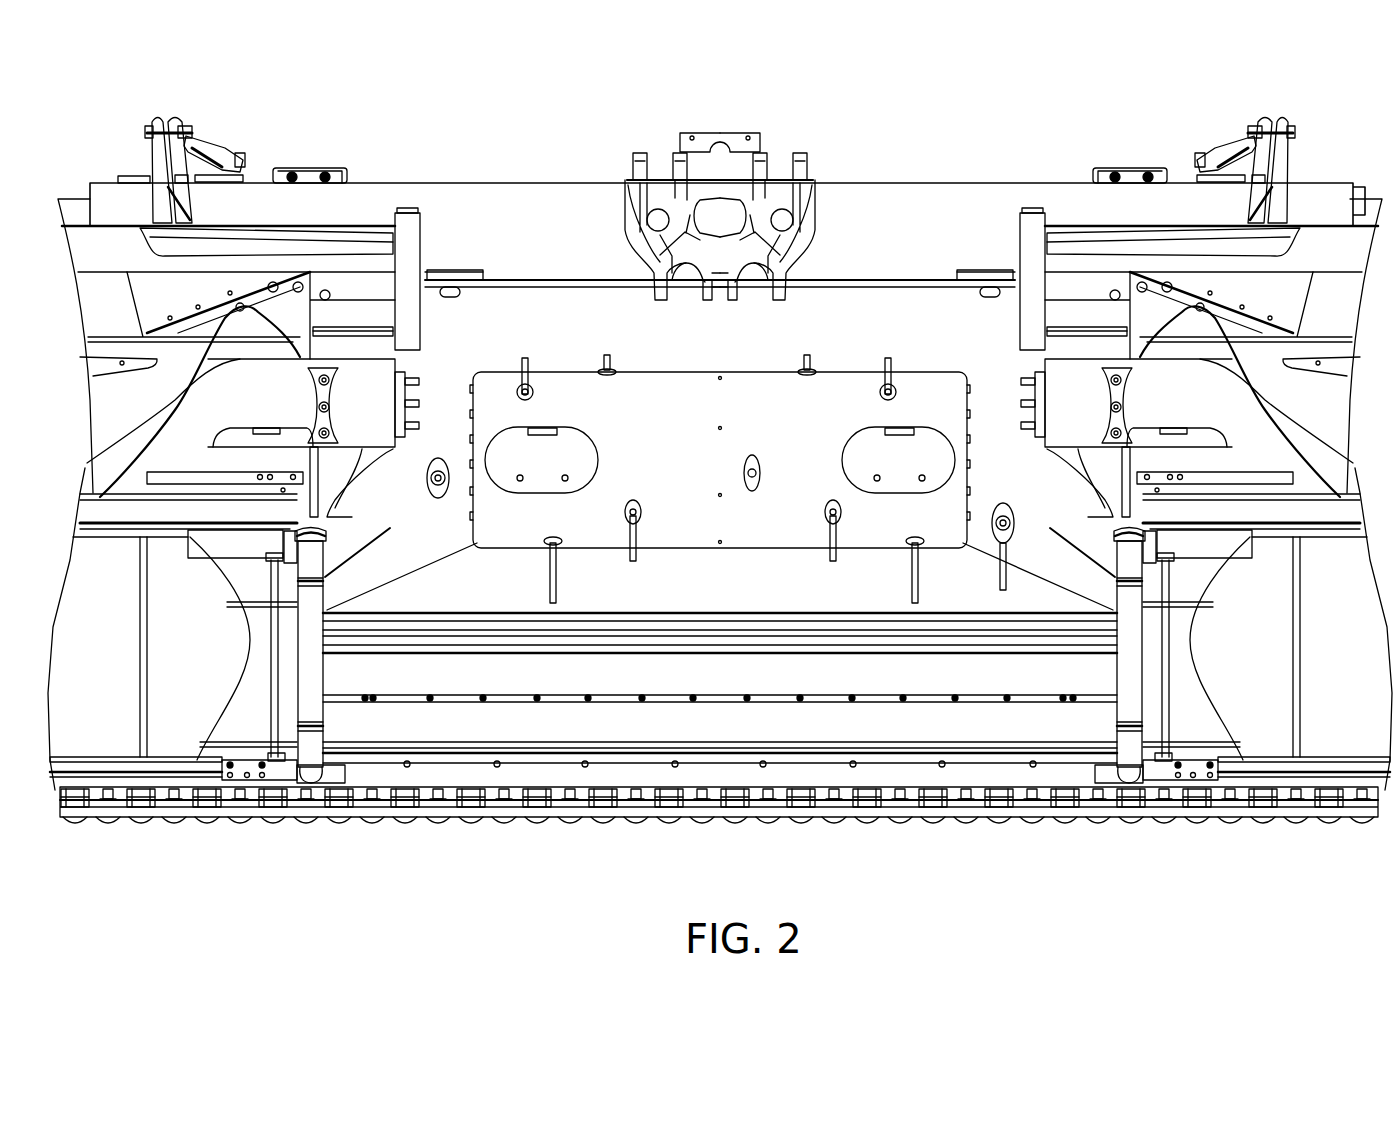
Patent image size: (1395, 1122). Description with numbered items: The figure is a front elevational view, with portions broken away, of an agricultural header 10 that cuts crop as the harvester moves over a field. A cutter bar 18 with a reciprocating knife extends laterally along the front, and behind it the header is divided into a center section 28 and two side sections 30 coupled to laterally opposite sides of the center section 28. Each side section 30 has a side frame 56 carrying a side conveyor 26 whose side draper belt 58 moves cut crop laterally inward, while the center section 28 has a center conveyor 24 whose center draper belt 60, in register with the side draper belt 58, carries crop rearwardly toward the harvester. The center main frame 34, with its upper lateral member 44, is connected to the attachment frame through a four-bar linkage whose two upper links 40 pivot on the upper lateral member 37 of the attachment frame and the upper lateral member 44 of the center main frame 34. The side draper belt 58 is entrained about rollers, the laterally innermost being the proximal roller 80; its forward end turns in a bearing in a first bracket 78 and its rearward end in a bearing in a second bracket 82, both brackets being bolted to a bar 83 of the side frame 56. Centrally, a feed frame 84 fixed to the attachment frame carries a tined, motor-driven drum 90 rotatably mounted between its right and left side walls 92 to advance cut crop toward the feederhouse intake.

The agricultural header 10 is at (163, 77).
The cutter bar 18 is at (870, 813).
The center conveyor 24 is at (490, 670).
The side conveyor 26 is at (73, 713).
The center section 28 is at (860, 172).
The side section 30 is at (108, 855).
The center main frame 34 is at (567, 225).
The upper lateral member 37 is at (138, 176).
The upper link 40 is at (203, 150).
The upper lateral member 44 is at (492, 200).
The side frame 56 is at (233, 543).
The side draper belt 58 is at (112, 717).
The center draper belt 60 is at (730, 677).
The first bracket 78 is at (292, 752).
The proximal roller 80 is at (310, 670).
The second bracket 82 is at (336, 530).
The bar 83 is at (278, 653).
The feed frame 84 is at (1086, 568).
The drum 90 is at (657, 417).
The side wall 92 is at (370, 560).